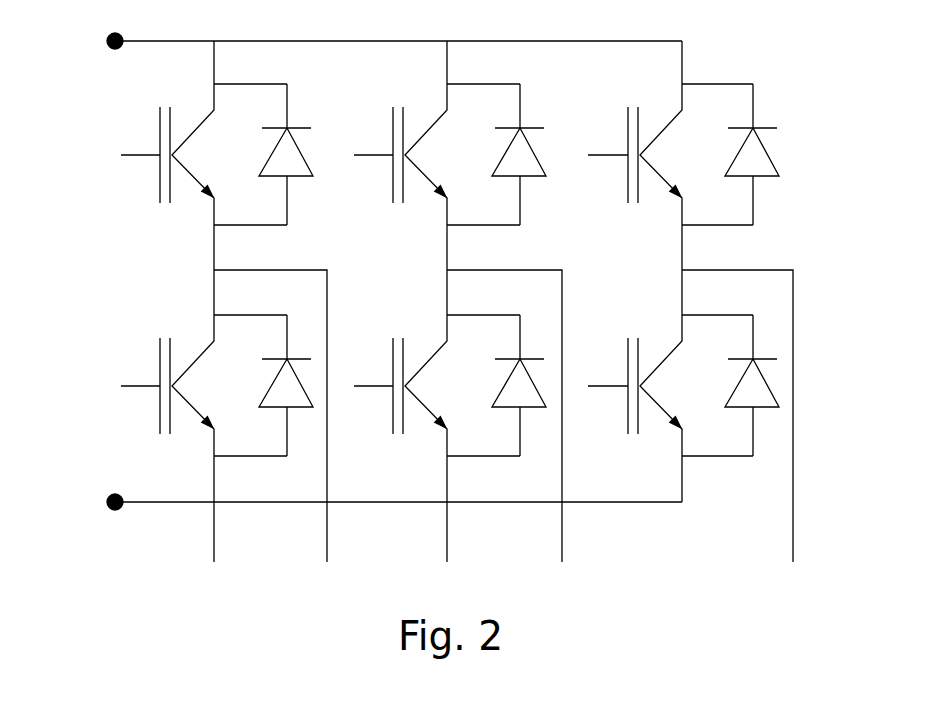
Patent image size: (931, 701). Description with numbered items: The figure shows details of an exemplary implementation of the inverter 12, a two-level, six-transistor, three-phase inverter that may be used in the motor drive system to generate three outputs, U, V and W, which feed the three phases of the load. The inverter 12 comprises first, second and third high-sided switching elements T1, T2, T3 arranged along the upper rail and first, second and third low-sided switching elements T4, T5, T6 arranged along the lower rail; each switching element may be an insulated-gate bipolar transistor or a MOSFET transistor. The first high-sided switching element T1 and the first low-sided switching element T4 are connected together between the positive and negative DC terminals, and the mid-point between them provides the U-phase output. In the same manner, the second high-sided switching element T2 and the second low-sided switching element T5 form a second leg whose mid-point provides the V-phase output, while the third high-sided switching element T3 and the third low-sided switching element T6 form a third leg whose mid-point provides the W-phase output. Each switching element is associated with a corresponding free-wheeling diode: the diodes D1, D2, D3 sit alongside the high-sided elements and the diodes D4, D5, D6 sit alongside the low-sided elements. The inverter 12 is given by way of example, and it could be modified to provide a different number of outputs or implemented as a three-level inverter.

The inverter 12 is at (452, 331).
The first high-sided switching element T1 is at (204, 155).
The second high-sided switching element T2 is at (437, 155).
The third high-sided switching element T3 is at (670, 155).
The first low-sided switching element T4 is at (204, 416).
The second low-sided switching element T5 is at (437, 416).
The third low-sided switching element T6 is at (670, 386).
The free-wheeling diode D1 is at (286, 140).
The free-wheeling diode D2 is at (519, 140).
The free-wheeling diode D3 is at (752, 140).
The free-wheeling diode D4 is at (286, 371).
The free-wheeling diode D5 is at (519, 371).
The free-wheeling diode D6 is at (752, 371).